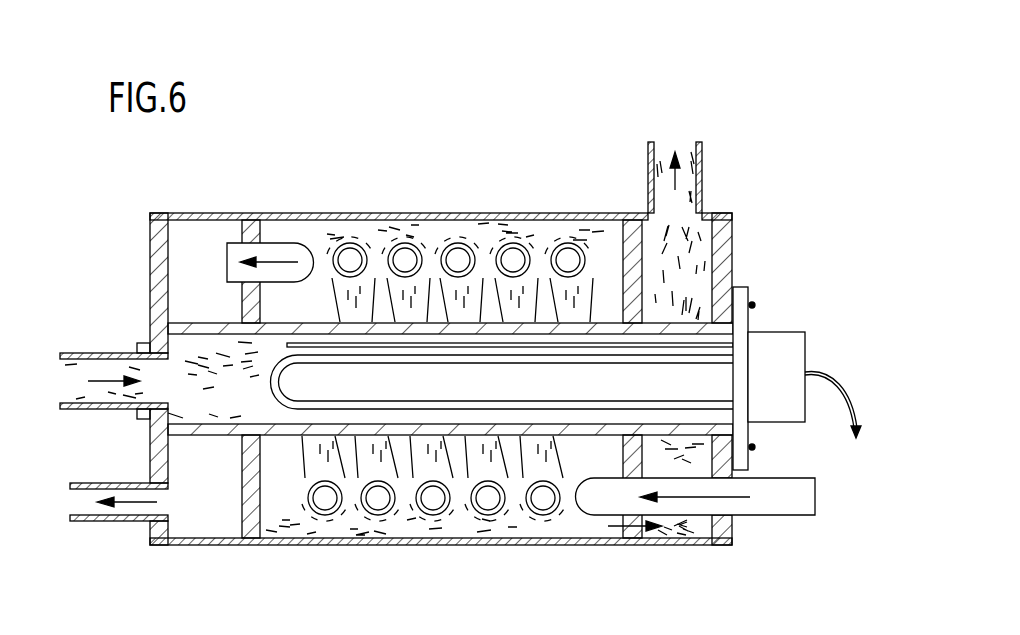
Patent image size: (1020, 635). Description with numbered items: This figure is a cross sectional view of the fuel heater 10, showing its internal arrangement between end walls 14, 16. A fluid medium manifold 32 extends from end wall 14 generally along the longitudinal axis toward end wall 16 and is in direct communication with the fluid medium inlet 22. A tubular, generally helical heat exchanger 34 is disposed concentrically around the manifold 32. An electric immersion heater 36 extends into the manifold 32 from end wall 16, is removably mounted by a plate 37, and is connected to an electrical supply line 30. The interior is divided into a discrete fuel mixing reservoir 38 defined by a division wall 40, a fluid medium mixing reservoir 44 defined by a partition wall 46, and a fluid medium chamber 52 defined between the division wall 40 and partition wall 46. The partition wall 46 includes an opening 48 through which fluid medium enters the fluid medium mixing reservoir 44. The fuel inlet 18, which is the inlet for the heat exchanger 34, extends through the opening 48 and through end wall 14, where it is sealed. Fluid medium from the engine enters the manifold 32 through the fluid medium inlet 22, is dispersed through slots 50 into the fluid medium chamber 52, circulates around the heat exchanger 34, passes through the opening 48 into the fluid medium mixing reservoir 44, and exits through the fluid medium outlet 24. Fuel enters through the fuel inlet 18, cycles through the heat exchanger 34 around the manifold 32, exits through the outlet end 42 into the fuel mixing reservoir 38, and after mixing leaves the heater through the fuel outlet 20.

The fuel heater 10 is at (556, 88).
The end wall 14 is at (150, 237).
The end wall 16 is at (732, 233).
The fuel inlet 18 is at (765, 515).
The fuel outlet 20 is at (112, 521).
The fluid medium inlet 22 is at (90, 409).
The fluid medium outlet 24 is at (703, 165).
The electrical supply line 30 is at (822, 376).
The fluid medium manifold 32 is at (205, 324).
The heat exchanger 34 is at (400, 243).
The electric immersion heater 36 is at (752, 306).
The plate 37 is at (140, 413).
The fuel mixing reservoir 38 is at (195, 232).
The division wall 40 is at (262, 236).
The outlet end 42 is at (227, 262).
The fluid medium mixing reservoir 44 is at (648, 217).
The partition wall 46 is at (598, 255).
The opening 48 is at (607, 545).
The slots 50 is at (330, 345).
The fluid medium chamber 52 is at (447, 232).